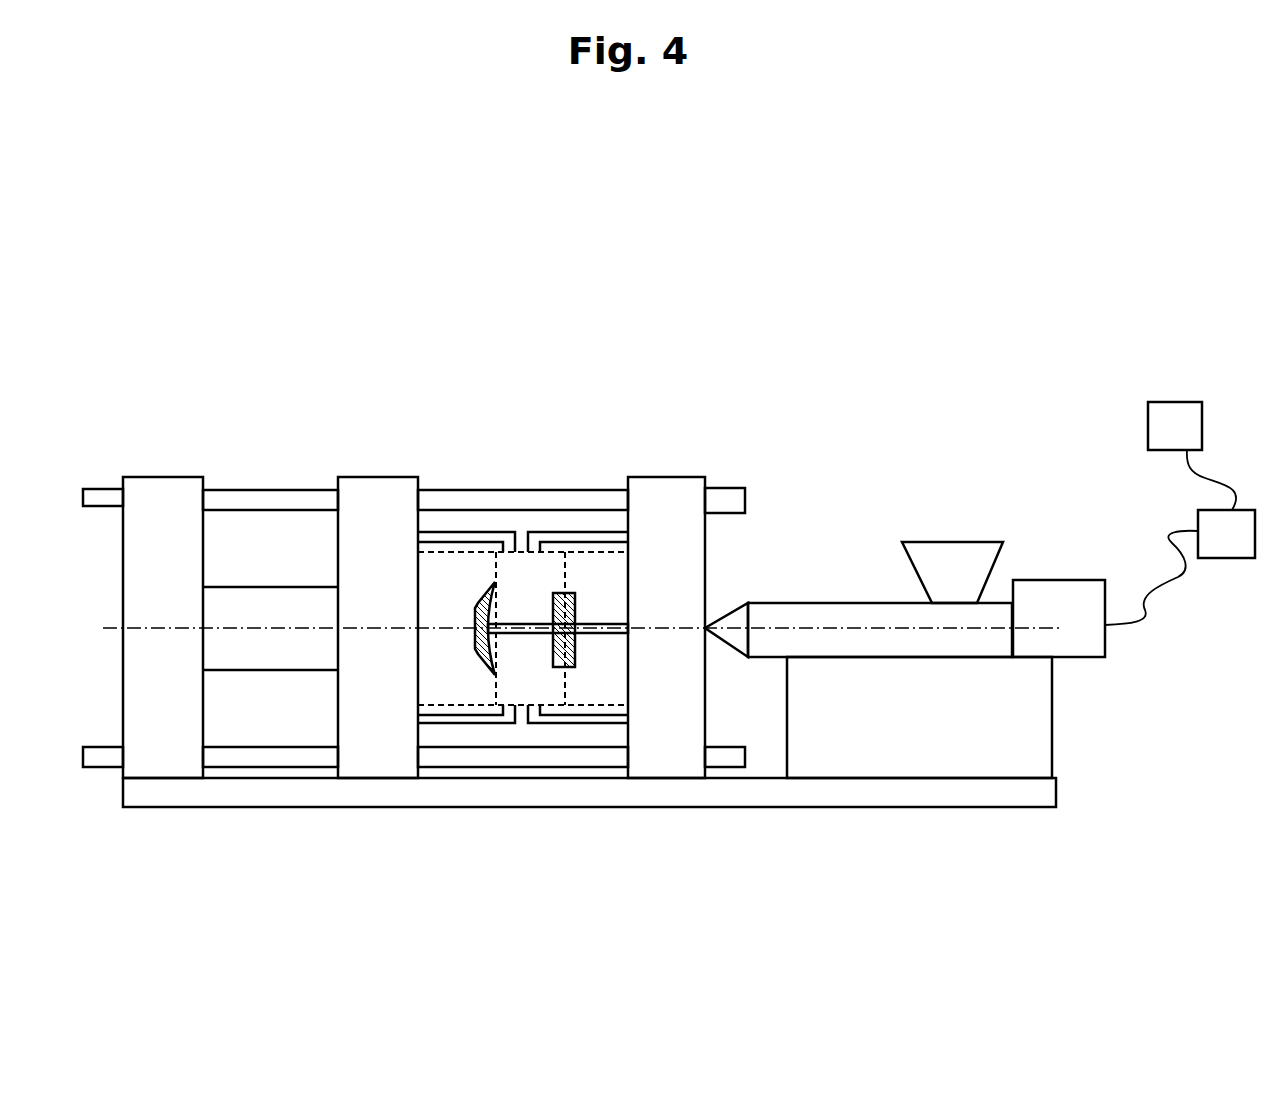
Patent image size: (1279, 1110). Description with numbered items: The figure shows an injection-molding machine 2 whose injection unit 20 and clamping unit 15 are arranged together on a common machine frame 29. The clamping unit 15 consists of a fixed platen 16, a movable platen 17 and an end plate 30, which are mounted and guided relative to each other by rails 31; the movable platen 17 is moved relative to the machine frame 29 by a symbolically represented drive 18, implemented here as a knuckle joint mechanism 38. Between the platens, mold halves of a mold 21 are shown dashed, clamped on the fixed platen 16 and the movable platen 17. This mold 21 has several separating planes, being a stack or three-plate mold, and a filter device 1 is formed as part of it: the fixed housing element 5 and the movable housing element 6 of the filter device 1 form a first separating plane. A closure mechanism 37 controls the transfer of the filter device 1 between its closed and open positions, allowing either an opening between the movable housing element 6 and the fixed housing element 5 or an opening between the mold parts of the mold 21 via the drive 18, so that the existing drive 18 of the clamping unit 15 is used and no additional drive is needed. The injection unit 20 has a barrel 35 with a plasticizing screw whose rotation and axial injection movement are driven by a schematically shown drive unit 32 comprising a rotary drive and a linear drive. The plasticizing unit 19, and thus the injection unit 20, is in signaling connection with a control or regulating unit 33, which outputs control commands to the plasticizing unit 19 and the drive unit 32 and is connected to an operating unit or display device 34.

The filter device 1 is at (576, 556).
The molding machine 2 is at (250, 205).
The fixed housing element 5 is at (597, 662).
The movable housing element 6 is at (528, 675).
The clamping unit 15 is at (490, 315).
The fixed platen 16 is at (675, 477).
The movable platen 17 is at (360, 477).
The drive 18 is at (270, 628).
The knuckle joint mechanism 38 is at (245, 610).
The plasticizing unit 19 is at (869, 513).
The injection unit 20 is at (762, 316).
The mold 21 is at (463, 585).
The machine frame 29 is at (538, 795).
The end plate 30 is at (158, 497).
The rails 31 is at (725, 497).
The drive unit 32 is at (1050, 603).
The control or regulating unit 33 is at (1230, 547).
The operating unit and/or display device 34 is at (1168, 413).
The barrel 35 is at (820, 610).
The closure mechanism 37 is at (505, 720).